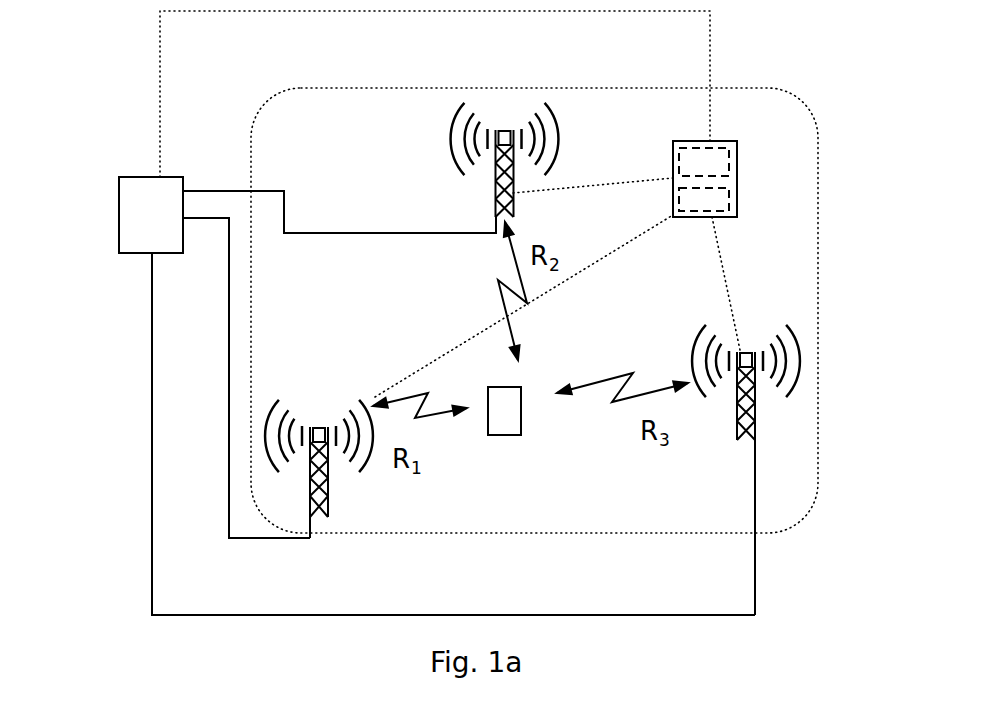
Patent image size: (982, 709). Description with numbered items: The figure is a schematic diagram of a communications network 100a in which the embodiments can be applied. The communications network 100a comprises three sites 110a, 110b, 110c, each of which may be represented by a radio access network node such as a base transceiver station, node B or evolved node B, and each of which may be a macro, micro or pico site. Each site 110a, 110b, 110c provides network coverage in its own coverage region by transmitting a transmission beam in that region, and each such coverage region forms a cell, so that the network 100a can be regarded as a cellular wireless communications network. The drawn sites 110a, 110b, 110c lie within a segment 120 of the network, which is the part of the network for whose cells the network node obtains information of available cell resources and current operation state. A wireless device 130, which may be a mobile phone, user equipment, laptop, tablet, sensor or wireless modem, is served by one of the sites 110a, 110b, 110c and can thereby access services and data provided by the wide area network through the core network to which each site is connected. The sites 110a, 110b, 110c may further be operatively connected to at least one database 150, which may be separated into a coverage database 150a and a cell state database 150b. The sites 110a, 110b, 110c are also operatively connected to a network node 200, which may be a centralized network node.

The communications network 100a is at (818, 55).
The site 110a is at (328, 500).
The site 110b is at (496, 199).
The site 110c is at (755, 413).
The segment 120 is at (607, 533).
The wireless device 130 is at (502, 418).
The database 150 is at (783, 165).
The coverage database 150a is at (712, 160).
The cell state database 150b is at (712, 203).
The network node 200 is at (119, 214).